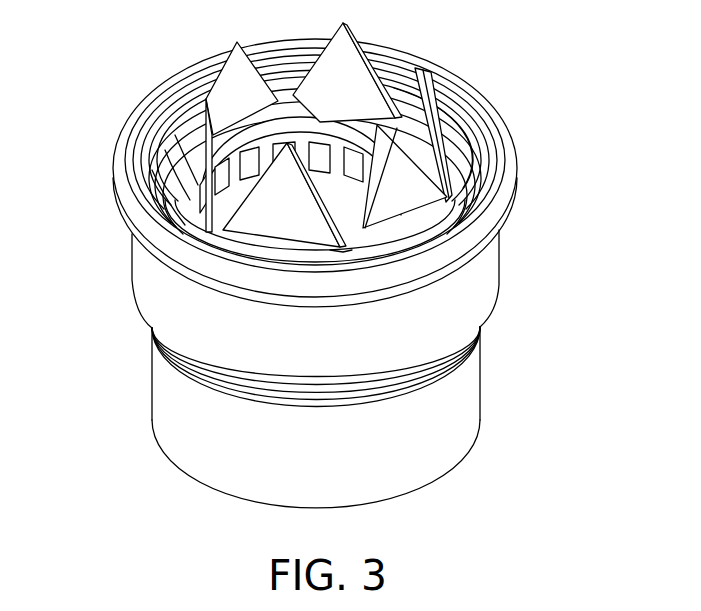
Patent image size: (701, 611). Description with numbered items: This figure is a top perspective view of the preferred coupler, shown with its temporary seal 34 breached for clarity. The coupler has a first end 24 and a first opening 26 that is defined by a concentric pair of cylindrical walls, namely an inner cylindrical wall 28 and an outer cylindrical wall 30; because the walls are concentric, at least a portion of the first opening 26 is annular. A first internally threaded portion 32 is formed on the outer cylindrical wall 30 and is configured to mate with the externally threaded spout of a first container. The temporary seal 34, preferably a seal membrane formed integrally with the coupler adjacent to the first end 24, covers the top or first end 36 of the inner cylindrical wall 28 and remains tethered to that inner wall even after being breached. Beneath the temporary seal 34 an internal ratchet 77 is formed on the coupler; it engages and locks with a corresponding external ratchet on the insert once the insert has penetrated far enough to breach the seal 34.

The first end 24 is at (474, 97).
The first opening 26 is at (465, 138).
The inner cylindrical wall 28 is at (448, 185).
The outer cylindrical wall 30 is at (500, 263).
The first internally threaded portion 32 is at (160, 160).
The temporary seal 34 is at (353, 36).
The first end of the inner cylindrical wall 36 is at (458, 156).
The internal ratchet 77 is at (343, 252).